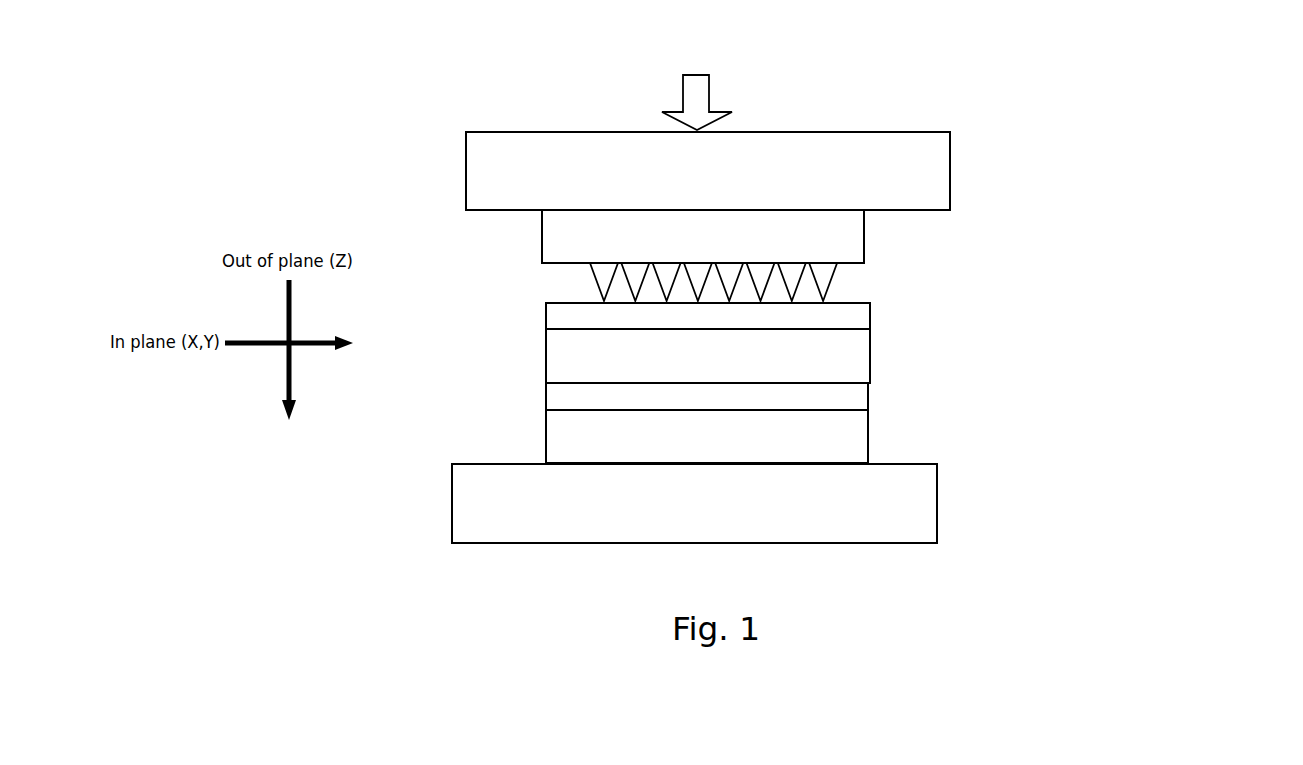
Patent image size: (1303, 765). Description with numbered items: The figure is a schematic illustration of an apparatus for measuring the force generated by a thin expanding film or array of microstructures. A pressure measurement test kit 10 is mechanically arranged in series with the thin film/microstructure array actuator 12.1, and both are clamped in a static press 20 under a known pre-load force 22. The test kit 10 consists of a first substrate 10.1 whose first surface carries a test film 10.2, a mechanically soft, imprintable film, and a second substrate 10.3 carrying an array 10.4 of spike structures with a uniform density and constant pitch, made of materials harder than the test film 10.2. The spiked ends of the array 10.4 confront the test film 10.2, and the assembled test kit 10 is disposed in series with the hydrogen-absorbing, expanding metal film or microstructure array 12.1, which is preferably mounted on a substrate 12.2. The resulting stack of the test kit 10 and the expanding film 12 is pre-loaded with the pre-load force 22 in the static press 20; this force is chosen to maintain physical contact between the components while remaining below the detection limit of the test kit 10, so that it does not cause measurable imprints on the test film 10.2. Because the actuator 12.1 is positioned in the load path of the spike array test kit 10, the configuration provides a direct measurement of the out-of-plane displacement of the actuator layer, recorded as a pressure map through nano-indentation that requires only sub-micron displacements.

The pre-load force 22 is at (703, 86).
The static press 20 is at (928, 165).
The pressure measurement test kit 10 is at (500, 382).
The second substrate 10.3 is at (853, 248).
The array of spike structures 10.4 is at (852, 283).
The test film 10.2 is at (847, 322).
The first substrate 10.1 is at (855, 370).
The expanding film 12 is at (500, 382).
The actuator substrate 12.2 is at (847, 398).
The thin film/microstructure array actuator 12.1 is at (855, 445).